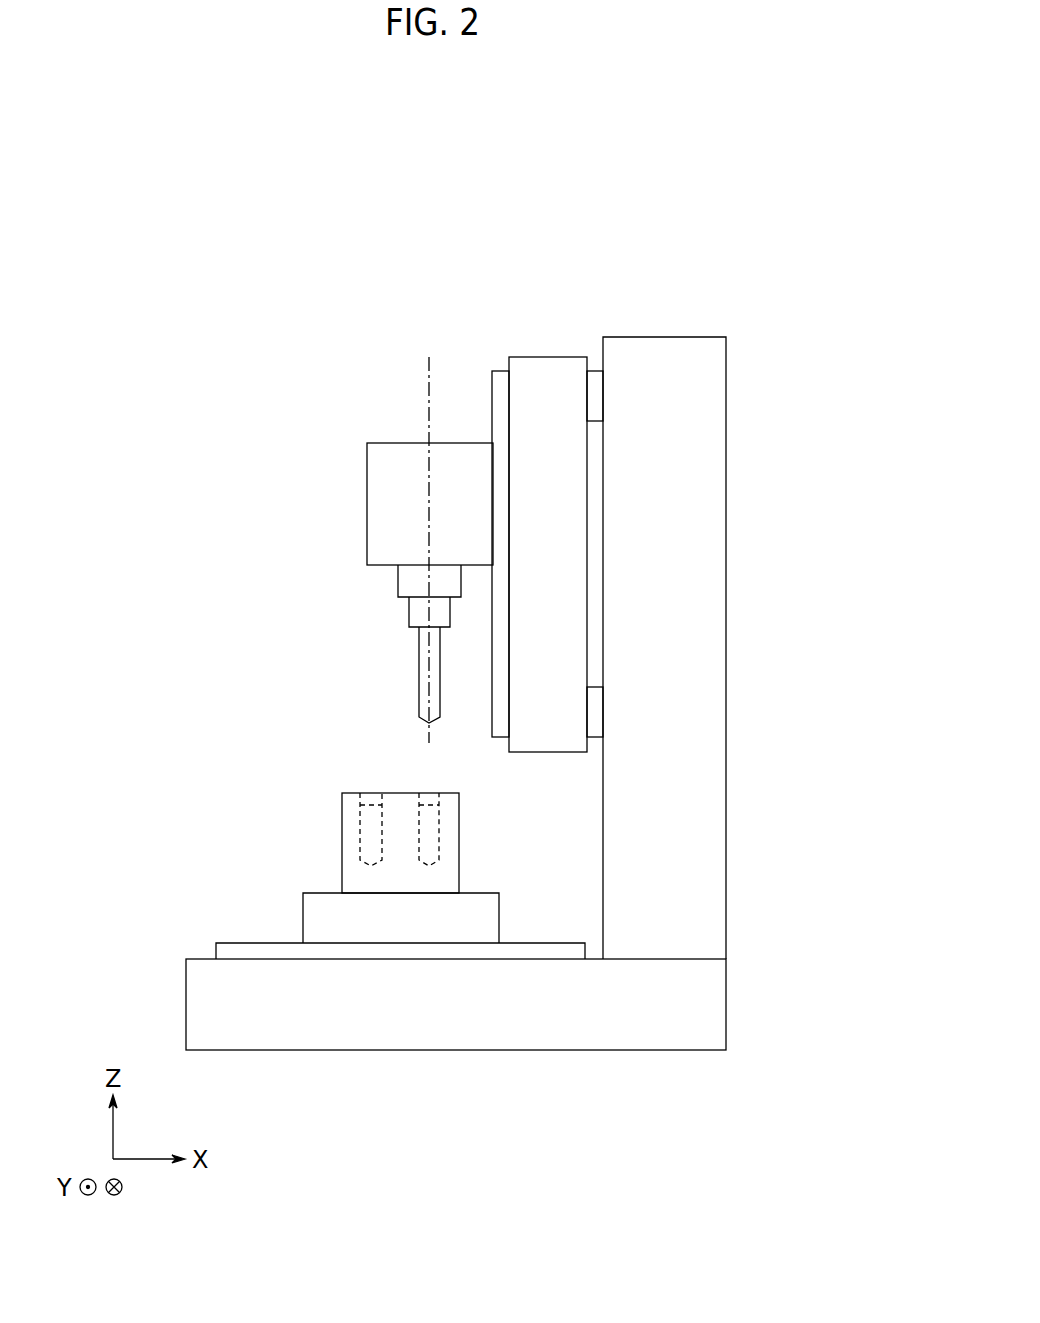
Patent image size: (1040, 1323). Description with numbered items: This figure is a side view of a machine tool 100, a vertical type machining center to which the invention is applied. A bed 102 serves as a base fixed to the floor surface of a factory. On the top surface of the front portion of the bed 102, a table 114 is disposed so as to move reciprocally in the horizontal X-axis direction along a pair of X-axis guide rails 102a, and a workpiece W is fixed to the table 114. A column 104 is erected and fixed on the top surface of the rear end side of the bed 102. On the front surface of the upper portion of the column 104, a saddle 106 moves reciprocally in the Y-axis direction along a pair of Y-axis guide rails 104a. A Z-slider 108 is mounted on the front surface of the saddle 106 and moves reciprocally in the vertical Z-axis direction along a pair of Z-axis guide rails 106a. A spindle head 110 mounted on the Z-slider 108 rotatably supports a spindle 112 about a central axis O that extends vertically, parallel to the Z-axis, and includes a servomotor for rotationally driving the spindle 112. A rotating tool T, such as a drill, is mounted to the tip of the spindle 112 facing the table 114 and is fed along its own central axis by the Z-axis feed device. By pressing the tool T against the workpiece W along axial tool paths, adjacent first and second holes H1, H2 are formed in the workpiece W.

The machine tool 100 is at (717, 193).
The bed 102 is at (697, 1003).
The X-axis guide rails 102a is at (400, 952).
The column 104 is at (696, 540).
The Y-axis guide rails 104a is at (594, 396).
The saddle 106 is at (547, 378).
The Z-axis guide rails 106a is at (500, 380).
The Z-slider 108 is at (392, 463).
The spindle head 110 is at (410, 582).
The spindle 112 is at (418, 614).
The rotating tool T is at (425, 658).
The central axis O is at (447, 747).
The workpiece W is at (352, 830).
The first hole H1 is at (372, 795).
The second hole H2 is at (428, 795).
The table 114 is at (320, 912).